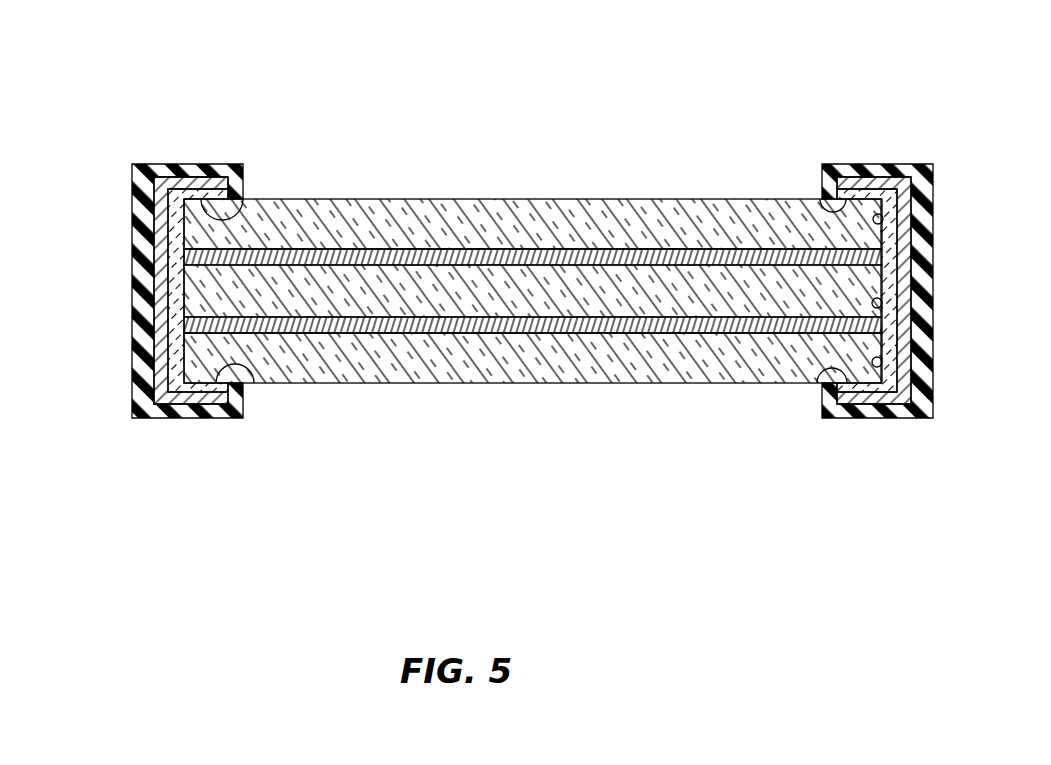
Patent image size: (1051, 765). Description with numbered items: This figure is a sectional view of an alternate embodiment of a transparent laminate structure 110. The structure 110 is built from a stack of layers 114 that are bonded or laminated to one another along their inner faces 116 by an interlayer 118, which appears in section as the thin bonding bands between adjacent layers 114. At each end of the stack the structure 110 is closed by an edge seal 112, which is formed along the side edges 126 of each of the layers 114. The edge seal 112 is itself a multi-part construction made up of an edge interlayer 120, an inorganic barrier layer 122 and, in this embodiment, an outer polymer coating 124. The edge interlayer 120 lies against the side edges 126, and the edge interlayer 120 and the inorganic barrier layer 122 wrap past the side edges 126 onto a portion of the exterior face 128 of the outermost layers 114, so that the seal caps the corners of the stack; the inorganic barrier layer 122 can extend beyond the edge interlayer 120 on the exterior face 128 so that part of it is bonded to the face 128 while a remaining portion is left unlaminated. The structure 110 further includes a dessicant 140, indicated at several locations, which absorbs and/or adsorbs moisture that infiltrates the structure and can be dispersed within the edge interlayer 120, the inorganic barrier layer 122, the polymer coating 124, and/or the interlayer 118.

The transparent laminate structure 110 is at (222, 76).
The edge seal 112 is at (162, 437).
The layers 114 is at (533, 291).
The inner faces 116 is at (372, 251).
The interlayer 118 is at (426, 256).
The edge interlayer 120 is at (173, 206).
The inorganic barrier layer 122 is at (162, 268).
The polymer coating 124 is at (138, 297).
The side edges 126 is at (883, 217).
The exterior face 128 is at (243, 199).
The dessicant 140 is at (210, 258).